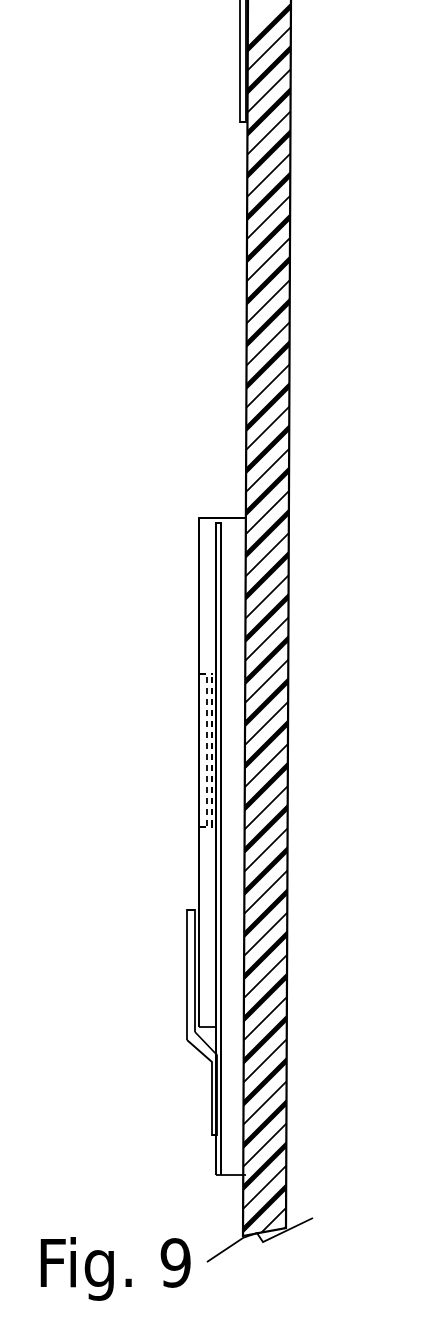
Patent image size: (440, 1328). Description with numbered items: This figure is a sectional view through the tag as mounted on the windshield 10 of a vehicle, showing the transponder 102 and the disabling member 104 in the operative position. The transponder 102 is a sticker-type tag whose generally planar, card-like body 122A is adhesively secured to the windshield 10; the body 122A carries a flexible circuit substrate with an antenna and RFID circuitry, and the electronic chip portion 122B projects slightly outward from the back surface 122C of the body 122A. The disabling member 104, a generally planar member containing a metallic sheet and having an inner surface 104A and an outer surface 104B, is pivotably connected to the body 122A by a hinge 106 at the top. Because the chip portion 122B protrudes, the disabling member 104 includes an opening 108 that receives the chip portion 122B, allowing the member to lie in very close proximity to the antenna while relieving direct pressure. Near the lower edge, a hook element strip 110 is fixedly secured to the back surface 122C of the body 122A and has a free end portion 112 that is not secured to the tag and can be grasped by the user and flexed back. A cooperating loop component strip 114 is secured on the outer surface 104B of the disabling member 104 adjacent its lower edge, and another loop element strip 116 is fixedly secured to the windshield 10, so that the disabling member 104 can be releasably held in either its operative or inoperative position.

The windshield 10 is at (293, 201).
The loop element strip 116 is at (240, 92).
The disabling member 104 is at (202, 644).
The hinge 106 is at (220, 517).
The outer surface 104B is at (199, 548).
The transponder 102 is at (232, 615).
The inner surface 104A is at (220, 570).
The opening 108 is at (206, 676).
The chip portion 122B is at (210, 775).
The body 122A is at (228, 837).
The back surface 122C is at (215, 873).
The free end portion 112 is at (187, 930).
The loop component strip 114 is at (197, 947).
The hook element strip 110 is at (203, 1057).